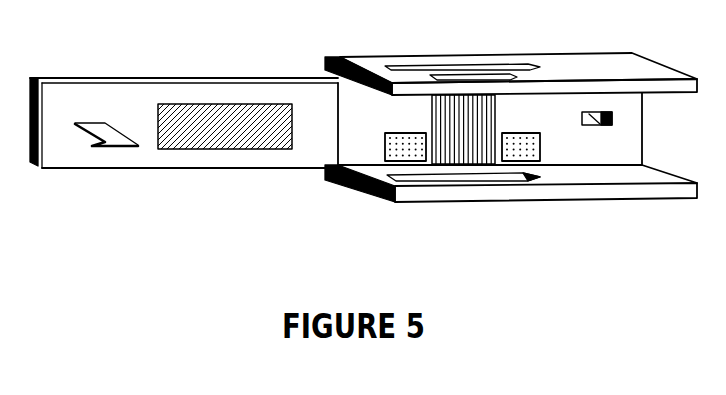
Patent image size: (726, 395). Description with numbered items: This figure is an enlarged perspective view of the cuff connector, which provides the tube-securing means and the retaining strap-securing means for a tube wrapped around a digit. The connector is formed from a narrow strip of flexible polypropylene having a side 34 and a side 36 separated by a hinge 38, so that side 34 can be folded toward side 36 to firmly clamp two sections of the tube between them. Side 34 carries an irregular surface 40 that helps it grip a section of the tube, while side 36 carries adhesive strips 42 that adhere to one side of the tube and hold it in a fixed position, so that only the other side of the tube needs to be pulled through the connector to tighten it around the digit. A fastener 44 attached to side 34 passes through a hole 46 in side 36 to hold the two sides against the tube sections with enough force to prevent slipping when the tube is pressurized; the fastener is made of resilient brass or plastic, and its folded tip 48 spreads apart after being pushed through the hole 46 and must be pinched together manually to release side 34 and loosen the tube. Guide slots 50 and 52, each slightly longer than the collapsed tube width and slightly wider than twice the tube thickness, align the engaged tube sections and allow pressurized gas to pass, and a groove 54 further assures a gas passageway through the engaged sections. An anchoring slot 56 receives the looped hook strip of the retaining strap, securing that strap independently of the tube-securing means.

The side 34 is at (125, 78).
The side 36 is at (621, 54).
The hinge 38 is at (338, 108).
The irregular surface 40 is at (222, 150).
The adhesive strips 42 is at (417, 162).
The fastener 44 is at (97, 123).
The hole 46 is at (603, 131).
The folded tip 48 is at (120, 148).
The guide slot 50 is at (400, 67).
The guide slot 52 is at (412, 181).
The groove 54 is at (497, 108).
The anchoring slot 56 is at (473, 77).